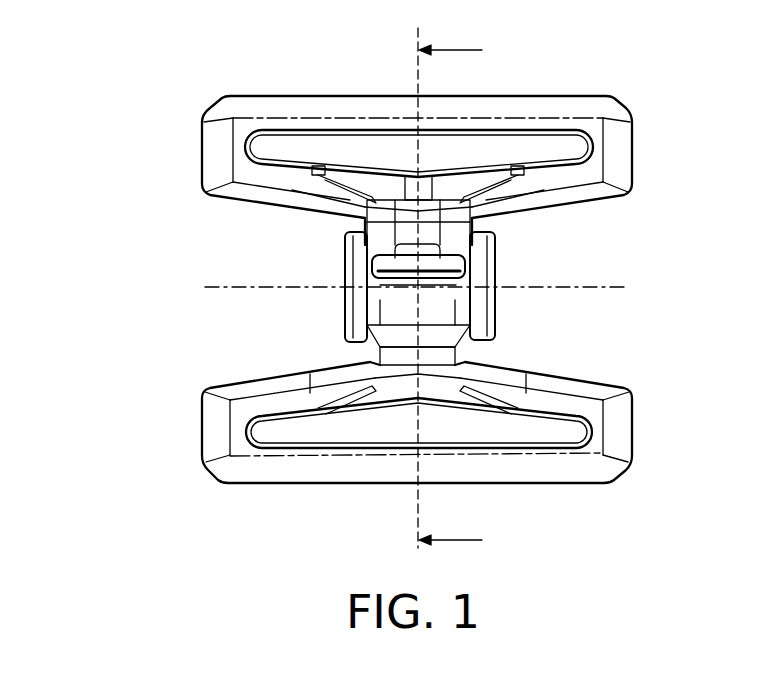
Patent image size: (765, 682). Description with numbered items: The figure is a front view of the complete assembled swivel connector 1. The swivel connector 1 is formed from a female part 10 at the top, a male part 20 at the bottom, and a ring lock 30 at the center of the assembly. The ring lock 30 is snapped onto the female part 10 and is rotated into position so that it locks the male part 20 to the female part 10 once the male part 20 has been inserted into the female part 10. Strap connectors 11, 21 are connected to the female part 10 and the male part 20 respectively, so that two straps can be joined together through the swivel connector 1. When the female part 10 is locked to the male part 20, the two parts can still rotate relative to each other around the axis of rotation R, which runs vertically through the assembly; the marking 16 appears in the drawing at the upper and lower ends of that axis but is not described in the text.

The swivel connector 1 is at (351, 277).
The female part 10 is at (417, 129).
The strap connector 11 is at (578, 97).
The reference line 16 is at (466, 295).
The male part 20 is at (420, 430).
The strap connector 21 is at (578, 486).
The ring lock 30 is at (343, 272).